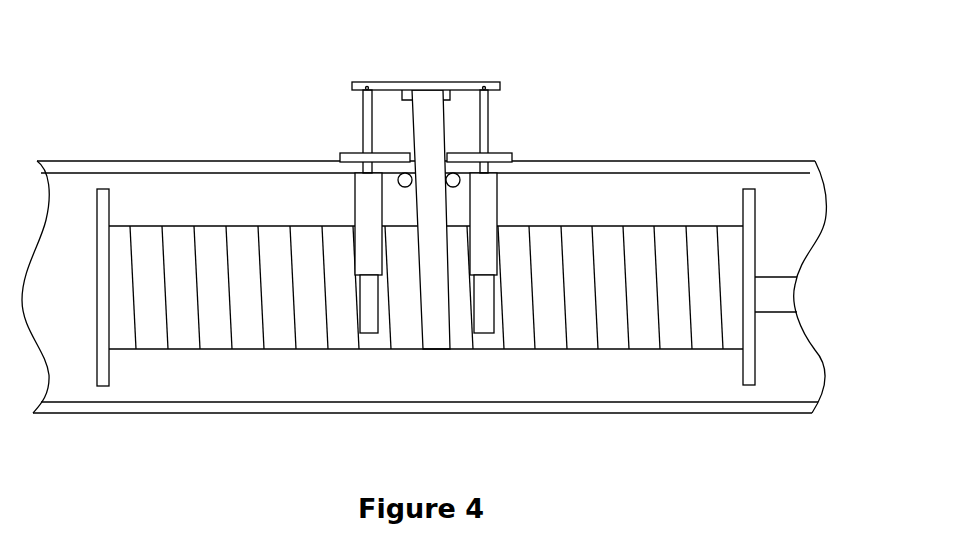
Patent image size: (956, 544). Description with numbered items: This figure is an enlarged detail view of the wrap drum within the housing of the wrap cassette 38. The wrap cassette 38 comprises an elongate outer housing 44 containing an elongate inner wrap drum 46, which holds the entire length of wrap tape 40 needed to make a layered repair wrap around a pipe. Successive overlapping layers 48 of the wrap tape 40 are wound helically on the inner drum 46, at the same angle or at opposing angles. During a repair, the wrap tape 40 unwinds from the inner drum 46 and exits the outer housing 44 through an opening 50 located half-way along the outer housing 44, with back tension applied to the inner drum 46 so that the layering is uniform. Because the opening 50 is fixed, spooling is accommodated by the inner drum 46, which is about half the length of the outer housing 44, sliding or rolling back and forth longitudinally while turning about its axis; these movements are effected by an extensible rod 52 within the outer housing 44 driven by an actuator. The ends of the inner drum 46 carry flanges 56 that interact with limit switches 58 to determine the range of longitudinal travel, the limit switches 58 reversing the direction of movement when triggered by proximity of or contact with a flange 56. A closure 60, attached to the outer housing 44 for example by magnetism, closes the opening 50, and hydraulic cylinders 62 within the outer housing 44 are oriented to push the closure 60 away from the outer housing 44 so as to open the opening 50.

The wrap cassette 38 is at (160, 111).
The wrap tape 40 is at (423, 108).
The outer housing 44 is at (615, 167).
The inner wrap drum 46 is at (165, 395).
The overlapping layers 48 is at (629, 253).
The opening 50 is at (408, 157).
The extensible rod 52 is at (768, 301).
The flanges 56 is at (100, 285).
The limit switches 58 is at (400, 175).
The closure 60 is at (380, 85).
The hydraulic cylinders 62 is at (363, 215).